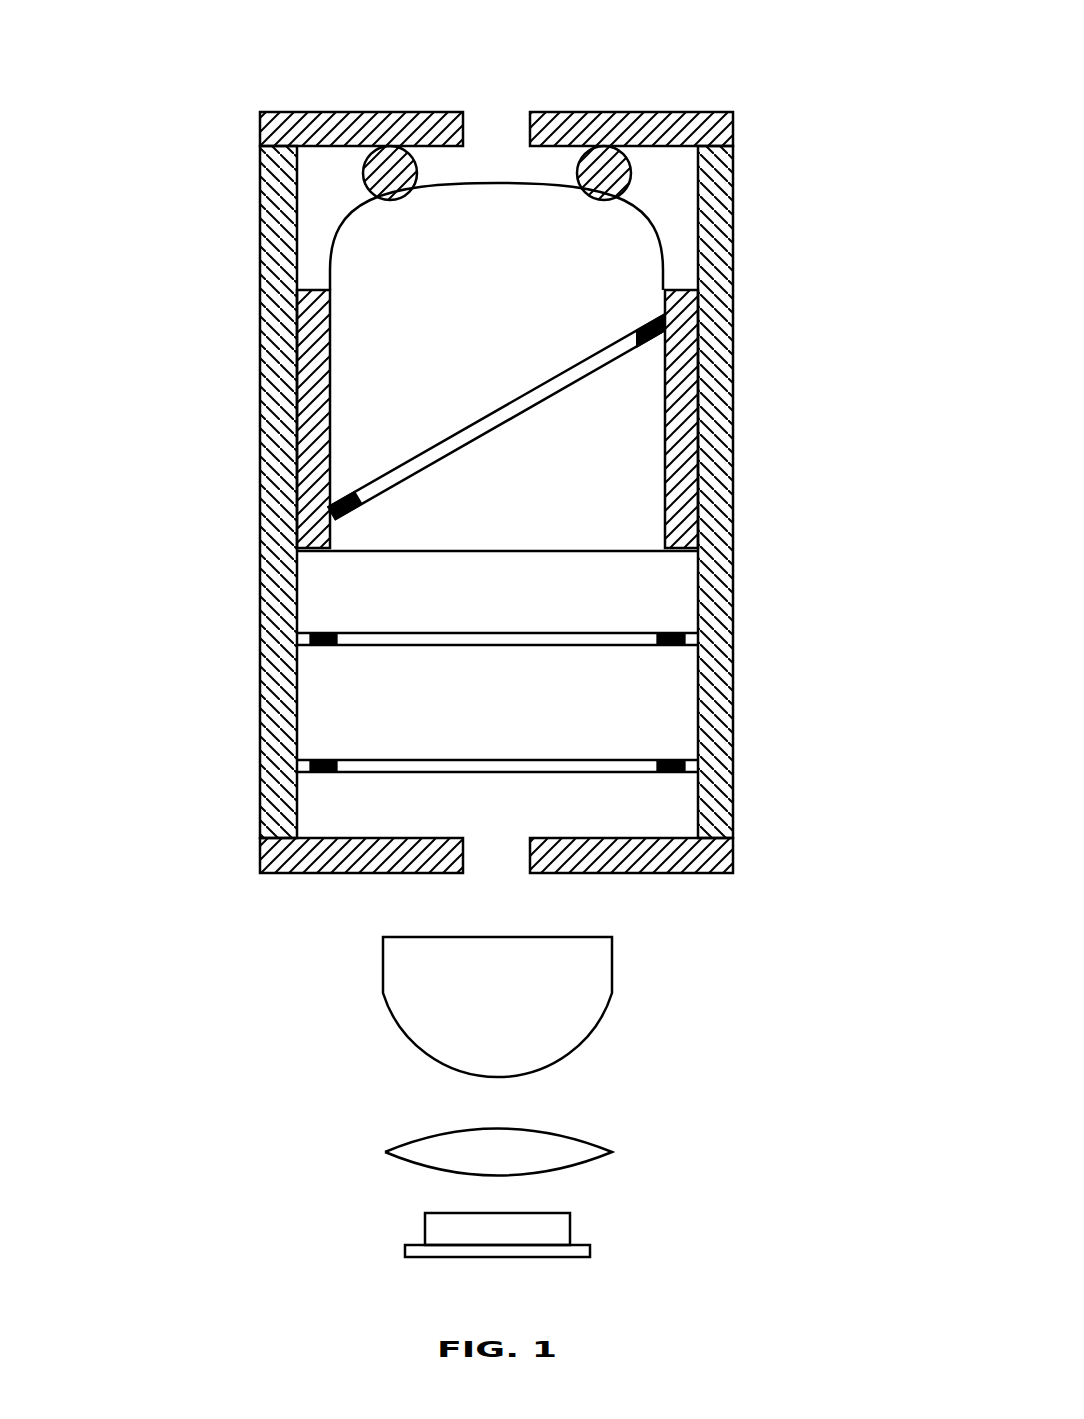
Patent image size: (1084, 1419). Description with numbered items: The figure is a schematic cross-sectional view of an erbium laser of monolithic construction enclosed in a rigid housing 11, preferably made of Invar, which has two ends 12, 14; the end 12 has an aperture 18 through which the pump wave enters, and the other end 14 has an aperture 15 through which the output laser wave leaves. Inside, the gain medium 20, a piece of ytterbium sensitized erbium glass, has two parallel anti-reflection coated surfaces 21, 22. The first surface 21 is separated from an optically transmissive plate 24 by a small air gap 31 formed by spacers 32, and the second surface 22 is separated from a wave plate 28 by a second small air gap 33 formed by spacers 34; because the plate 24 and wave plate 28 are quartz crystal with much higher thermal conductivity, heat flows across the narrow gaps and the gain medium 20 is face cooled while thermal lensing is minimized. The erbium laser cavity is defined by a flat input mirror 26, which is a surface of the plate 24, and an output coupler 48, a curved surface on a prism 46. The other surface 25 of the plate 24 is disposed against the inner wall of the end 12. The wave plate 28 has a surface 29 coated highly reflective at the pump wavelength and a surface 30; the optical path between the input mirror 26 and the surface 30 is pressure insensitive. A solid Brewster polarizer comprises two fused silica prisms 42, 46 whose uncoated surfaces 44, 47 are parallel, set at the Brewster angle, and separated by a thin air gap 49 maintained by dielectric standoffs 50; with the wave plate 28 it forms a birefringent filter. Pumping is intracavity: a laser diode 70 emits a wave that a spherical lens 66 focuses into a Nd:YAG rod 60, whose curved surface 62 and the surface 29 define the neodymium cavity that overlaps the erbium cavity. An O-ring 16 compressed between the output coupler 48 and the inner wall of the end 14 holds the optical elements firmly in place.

The housing 11 is at (250, 230).
The end of housing 12 is at (690, 874).
The end of housing 14 is at (641, 112).
The top aperture 15 is at (487, 128).
The O-ring 16 is at (620, 168).
The output aperture 18 is at (473, 857).
The gain medium 20 is at (340, 697).
The first surface of gain medium 21 is at (353, 758).
The second surface of gain medium 22 is at (360, 646).
The optically transmissive plate 24 is at (670, 810).
The surface of plate 25 is at (507, 840).
The input mirror 26 is at (627, 770).
The wave plate 28 is at (553, 557).
The surface of wave plate 29 is at (383, 633).
The surface of wave plate 30 is at (313, 548).
The air gap 31 is at (370, 768).
The spacer 32 is at (323, 771).
The air gap 33 is at (732, 672).
The spacer 34 is at (574, 612).
The prism 42 is at (623, 420).
The surface of prism 44 is at (603, 345).
The prism 46 is at (607, 245).
The surface of prism 47 is at (603, 343).
The output coupler 48 is at (533, 182).
The air gap 49 is at (397, 477).
The dielectric standoffs 50 is at (337, 502).
The Nd:YAG rod 60 is at (580, 993).
The curved surface 62 is at (585, 1050).
The spherical lens 66 is at (607, 1150).
The laser diode 70 is at (590, 1245).